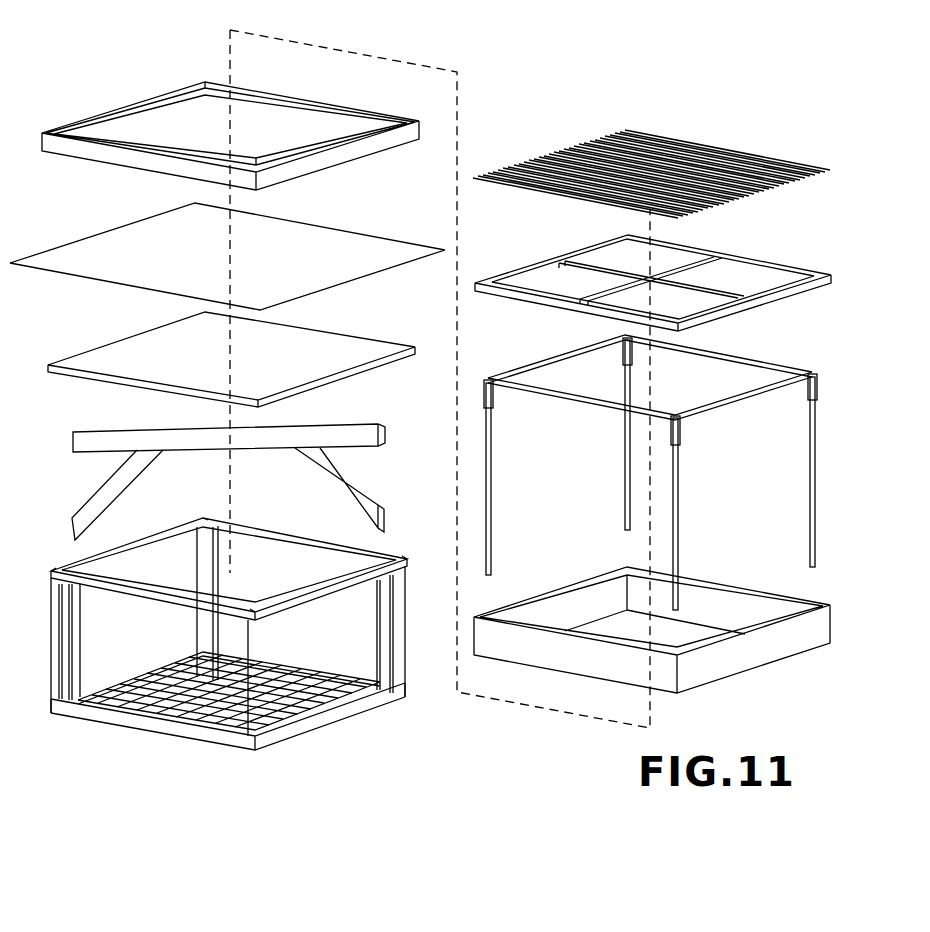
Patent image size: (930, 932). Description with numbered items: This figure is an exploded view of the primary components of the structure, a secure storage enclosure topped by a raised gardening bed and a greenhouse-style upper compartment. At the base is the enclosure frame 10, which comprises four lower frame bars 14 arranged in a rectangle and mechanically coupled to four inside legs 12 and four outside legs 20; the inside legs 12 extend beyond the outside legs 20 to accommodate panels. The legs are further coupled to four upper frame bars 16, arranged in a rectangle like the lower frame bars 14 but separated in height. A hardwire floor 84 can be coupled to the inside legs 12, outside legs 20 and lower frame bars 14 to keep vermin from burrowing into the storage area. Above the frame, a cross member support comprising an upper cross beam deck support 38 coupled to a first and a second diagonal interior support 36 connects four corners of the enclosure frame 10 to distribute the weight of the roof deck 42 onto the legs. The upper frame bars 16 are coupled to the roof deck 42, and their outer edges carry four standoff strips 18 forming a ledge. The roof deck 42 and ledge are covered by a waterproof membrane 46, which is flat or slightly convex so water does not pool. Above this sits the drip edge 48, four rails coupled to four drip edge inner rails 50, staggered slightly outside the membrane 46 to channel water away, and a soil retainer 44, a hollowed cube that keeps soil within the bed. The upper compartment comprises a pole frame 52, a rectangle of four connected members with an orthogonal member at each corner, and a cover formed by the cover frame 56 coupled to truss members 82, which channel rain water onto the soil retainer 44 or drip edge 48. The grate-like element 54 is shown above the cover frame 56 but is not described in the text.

The enclosure frame 10 is at (223, 628).
The inside legs 12 is at (65, 653).
The lower frame bars 14 is at (140, 670).
The upper frame bars 16 is at (316, 549).
The standoff strips 18 is at (408, 560).
The outside legs 20 is at (258, 648).
The diagonal interior support 36 is at (340, 478).
The upper cross beam deck support 38 is at (85, 440).
The roof deck 42 is at (362, 350).
The soil retainer 44 is at (750, 645).
The waterproof membrane 46 is at (352, 240).
The drip edge 48 is at (230, 107).
The drip edge inner rails 50 is at (286, 108).
The pole frame 52 is at (803, 362).
The grate 54 is at (712, 147).
The cover frame 56 is at (653, 272).
The truss members 82 is at (690, 270).
The hardwire floor 84 is at (280, 718).